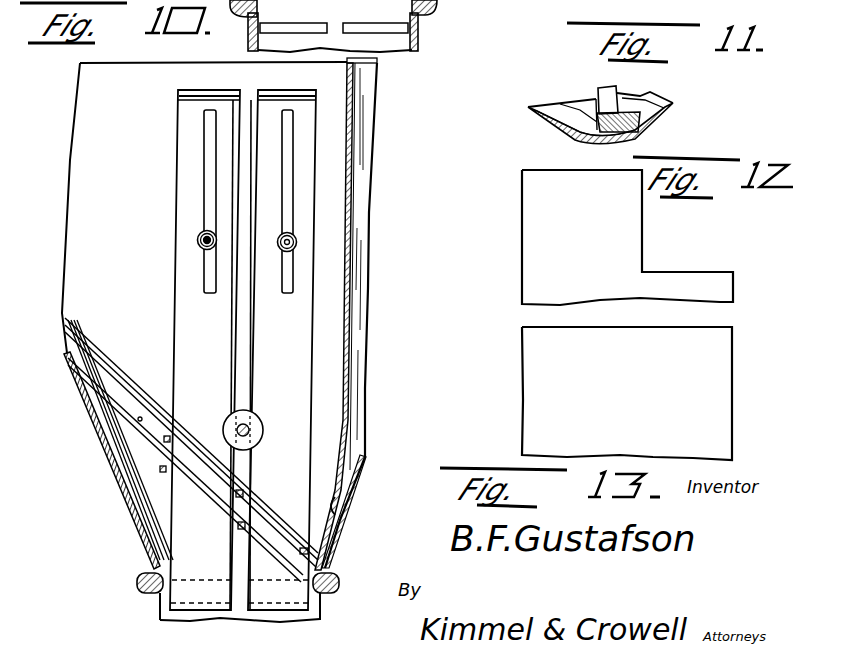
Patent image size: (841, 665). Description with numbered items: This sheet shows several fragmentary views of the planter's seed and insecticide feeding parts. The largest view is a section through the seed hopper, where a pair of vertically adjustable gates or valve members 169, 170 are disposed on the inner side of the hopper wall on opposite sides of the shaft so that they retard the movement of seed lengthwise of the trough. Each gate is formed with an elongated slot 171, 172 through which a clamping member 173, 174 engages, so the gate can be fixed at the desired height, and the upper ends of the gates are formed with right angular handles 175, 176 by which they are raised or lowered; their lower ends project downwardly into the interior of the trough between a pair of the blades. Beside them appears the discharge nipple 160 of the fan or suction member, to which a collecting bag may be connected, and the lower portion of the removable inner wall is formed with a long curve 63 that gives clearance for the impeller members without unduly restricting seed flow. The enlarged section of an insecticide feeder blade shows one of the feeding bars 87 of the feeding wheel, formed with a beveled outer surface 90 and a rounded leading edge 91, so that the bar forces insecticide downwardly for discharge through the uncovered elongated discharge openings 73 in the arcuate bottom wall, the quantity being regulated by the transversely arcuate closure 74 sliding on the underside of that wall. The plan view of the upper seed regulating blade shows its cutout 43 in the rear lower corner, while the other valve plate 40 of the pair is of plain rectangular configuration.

In FIG. 10, the discharge nipple 160 is at (355, 162).
In FIG. 10, the gate or valve member 169 is at (183, 342).
In FIG. 10, the gate or valve member 170 is at (307, 327).
In FIG. 10, the elongated slot 171 is at (156, 201).
In FIG. 10, the elongated slot 172 is at (367, 201).
In FIG. 10, the clamping member 173 is at (197, 240).
In FIG. 10, the clamping member 174 is at (365, 225).
In FIG. 10, the right angular handle 175 is at (171, 341).
In FIG. 10, the right angular handle 176 is at (280, 90).
In FIG. 10, the long curve 63 is at (338, 519).
In FIG. 11, the feeding bar 87 is at (562, 92).
In FIG. 11, the beveled outer surface 90 is at (617, 113).
In FIG. 11, the rounded leading edge 91 is at (675, 86).
In FIG. 11, the transversely arcuate closure 74 is at (626, 123).
In FIG. 11, the elongated discharge opening 73 is at (566, 137).
In FIG. 12, the cutout 43 is at (643, 243).
In FIG. 13, the valve plate 40 is at (532, 349).